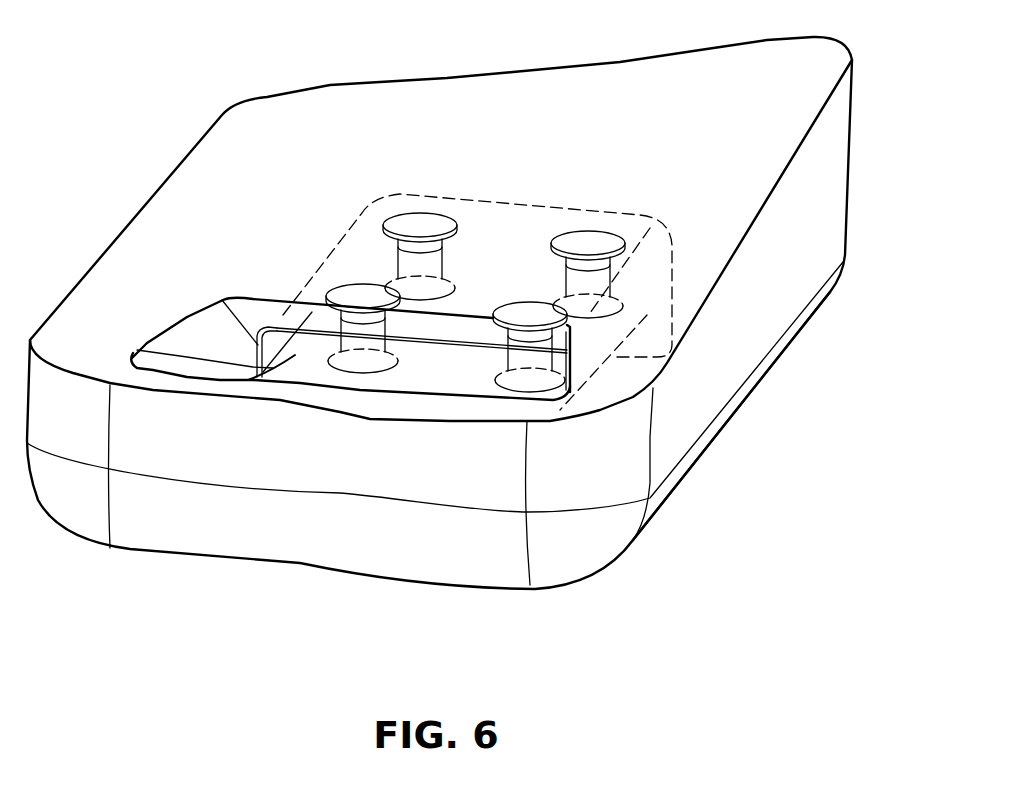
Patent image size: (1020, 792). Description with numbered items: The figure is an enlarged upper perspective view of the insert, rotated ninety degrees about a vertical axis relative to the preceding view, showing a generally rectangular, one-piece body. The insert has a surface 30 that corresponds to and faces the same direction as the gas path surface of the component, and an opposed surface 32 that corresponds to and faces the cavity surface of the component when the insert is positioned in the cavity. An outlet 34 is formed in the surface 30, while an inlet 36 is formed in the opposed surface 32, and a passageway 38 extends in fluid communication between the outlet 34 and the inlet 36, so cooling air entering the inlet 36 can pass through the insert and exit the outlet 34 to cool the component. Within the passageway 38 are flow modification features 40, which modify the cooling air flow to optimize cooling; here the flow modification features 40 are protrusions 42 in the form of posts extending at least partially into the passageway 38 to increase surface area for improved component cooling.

The surface 30 is at (285, 172).
The opposed surface 32 is at (788, 355).
The outlet 34 is at (133, 353).
The inlet 36 is at (657, 358).
The passageway 38 is at (596, 383).
The flow modification features 40 is at (520, 357).
The protrusions 42 is at (273, 327).